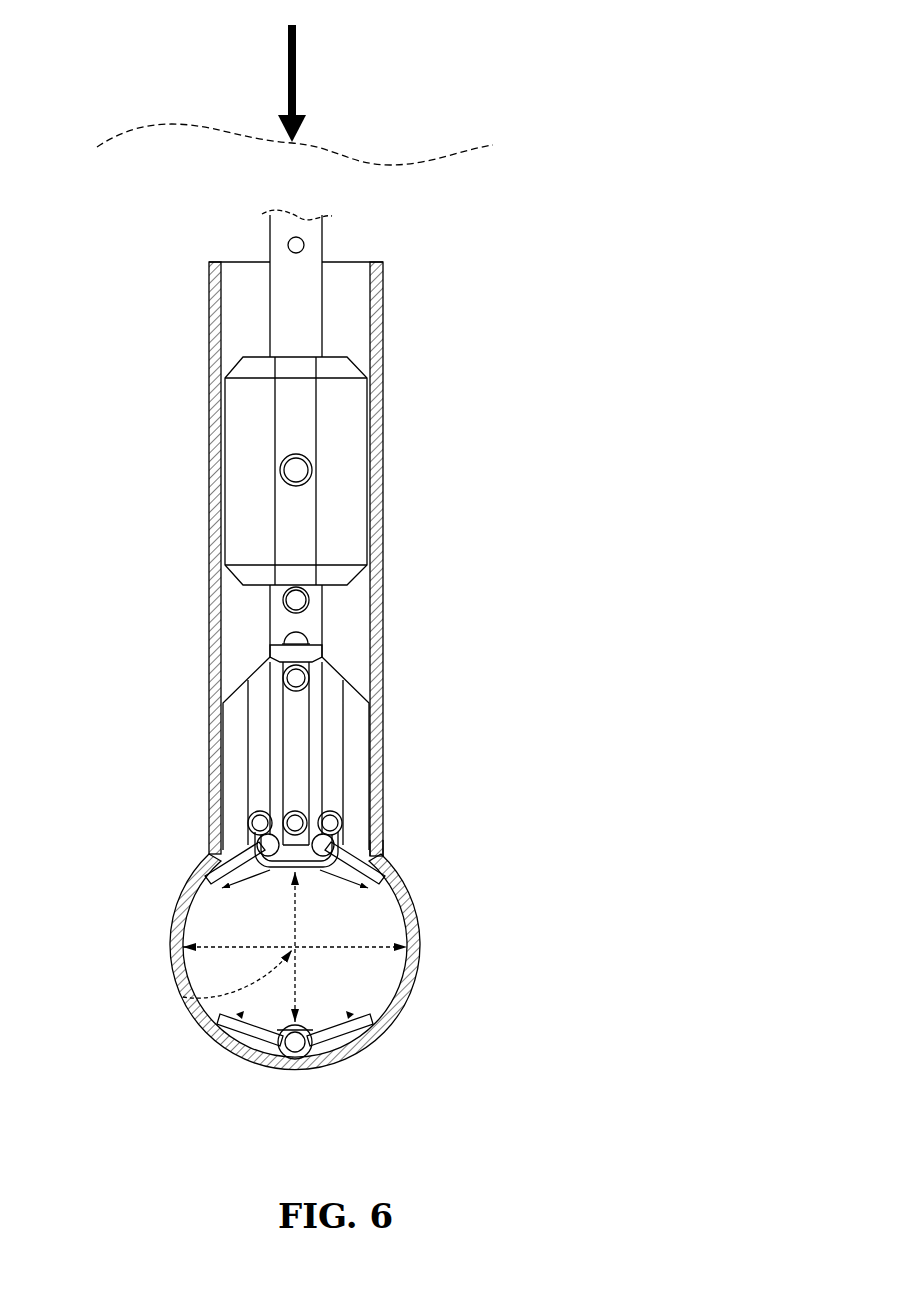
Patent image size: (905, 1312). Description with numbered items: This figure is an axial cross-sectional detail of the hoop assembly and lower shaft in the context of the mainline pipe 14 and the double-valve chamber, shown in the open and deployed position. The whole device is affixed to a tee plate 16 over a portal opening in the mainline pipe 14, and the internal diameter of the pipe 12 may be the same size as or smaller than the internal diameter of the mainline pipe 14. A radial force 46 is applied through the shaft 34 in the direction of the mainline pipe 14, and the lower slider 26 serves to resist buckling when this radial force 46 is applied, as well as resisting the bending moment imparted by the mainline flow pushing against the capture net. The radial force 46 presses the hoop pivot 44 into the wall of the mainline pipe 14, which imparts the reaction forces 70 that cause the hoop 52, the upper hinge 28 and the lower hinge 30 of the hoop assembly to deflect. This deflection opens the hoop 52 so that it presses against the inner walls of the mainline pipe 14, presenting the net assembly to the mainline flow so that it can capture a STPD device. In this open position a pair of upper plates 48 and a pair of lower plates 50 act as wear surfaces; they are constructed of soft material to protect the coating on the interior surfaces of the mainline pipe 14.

The pipe 12 is at (385, 345).
The mainline pipe 14 is at (413, 997).
The tee plate 16 is at (394, 850).
The lower slider 26 is at (322, 697).
The upper hinge 28 is at (390, 882).
The lower hinge 30 is at (343, 1040).
The shaft 34 is at (325, 310).
The hoop pivot 44 is at (317, 1063).
The radial force 46 is at (299, 47).
The upper plates 48 is at (205, 863).
The lower plates 50 is at (237, 1055).
The hoop 52 is at (183, 905).
The reaction forces 70 is at (183, 997).